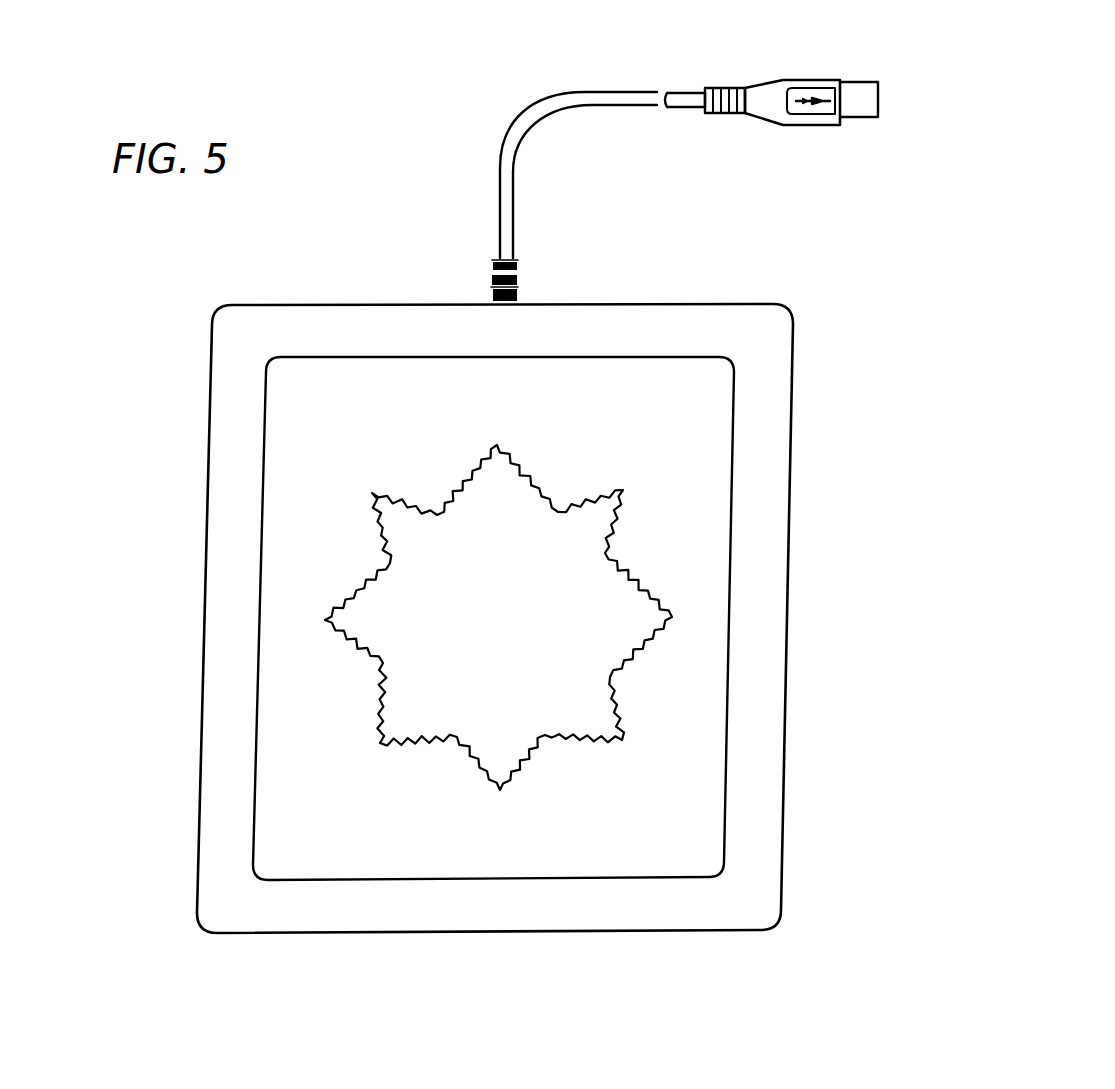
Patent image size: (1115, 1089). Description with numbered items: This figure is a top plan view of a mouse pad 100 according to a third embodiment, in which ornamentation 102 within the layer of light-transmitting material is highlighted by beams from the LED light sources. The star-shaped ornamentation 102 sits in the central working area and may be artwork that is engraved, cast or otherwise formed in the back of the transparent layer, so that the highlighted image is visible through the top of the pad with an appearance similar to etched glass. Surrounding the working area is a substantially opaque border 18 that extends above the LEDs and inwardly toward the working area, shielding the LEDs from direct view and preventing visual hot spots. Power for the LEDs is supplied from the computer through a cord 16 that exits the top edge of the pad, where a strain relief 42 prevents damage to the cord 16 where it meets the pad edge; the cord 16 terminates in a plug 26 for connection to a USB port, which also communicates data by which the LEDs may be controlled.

The mouse pad 100 is at (139, 330).
The opaque border 18 is at (657, 918).
The ornamentation 102 is at (436, 489).
The cord 16 is at (505, 150).
The strain relief 42 is at (517, 282).
The plug 26 is at (808, 75).